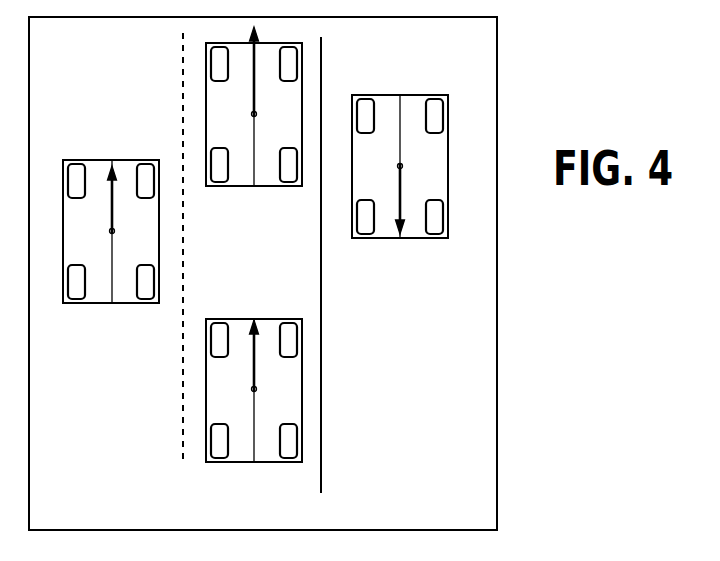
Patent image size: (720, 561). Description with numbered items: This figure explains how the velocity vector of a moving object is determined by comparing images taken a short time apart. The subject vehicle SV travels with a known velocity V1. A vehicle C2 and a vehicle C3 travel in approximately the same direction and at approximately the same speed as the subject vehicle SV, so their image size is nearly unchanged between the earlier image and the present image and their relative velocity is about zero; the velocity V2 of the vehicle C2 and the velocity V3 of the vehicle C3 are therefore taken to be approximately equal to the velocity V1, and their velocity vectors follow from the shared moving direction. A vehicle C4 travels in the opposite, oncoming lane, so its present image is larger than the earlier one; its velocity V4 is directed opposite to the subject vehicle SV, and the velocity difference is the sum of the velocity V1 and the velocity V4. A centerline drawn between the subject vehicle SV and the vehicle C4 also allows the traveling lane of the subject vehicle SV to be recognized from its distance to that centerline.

The vehicle C2 is at (78, 160).
The vehicle C3 is at (302, 57).
The vehicle C4 is at (421, 95).
The subject vehicle SV is at (302, 333).
The velocity V1 is at (272, 357).
The velocity V2 is at (131, 200).
The velocity V3 is at (272, 72).
The velocity V4 is at (417, 199).